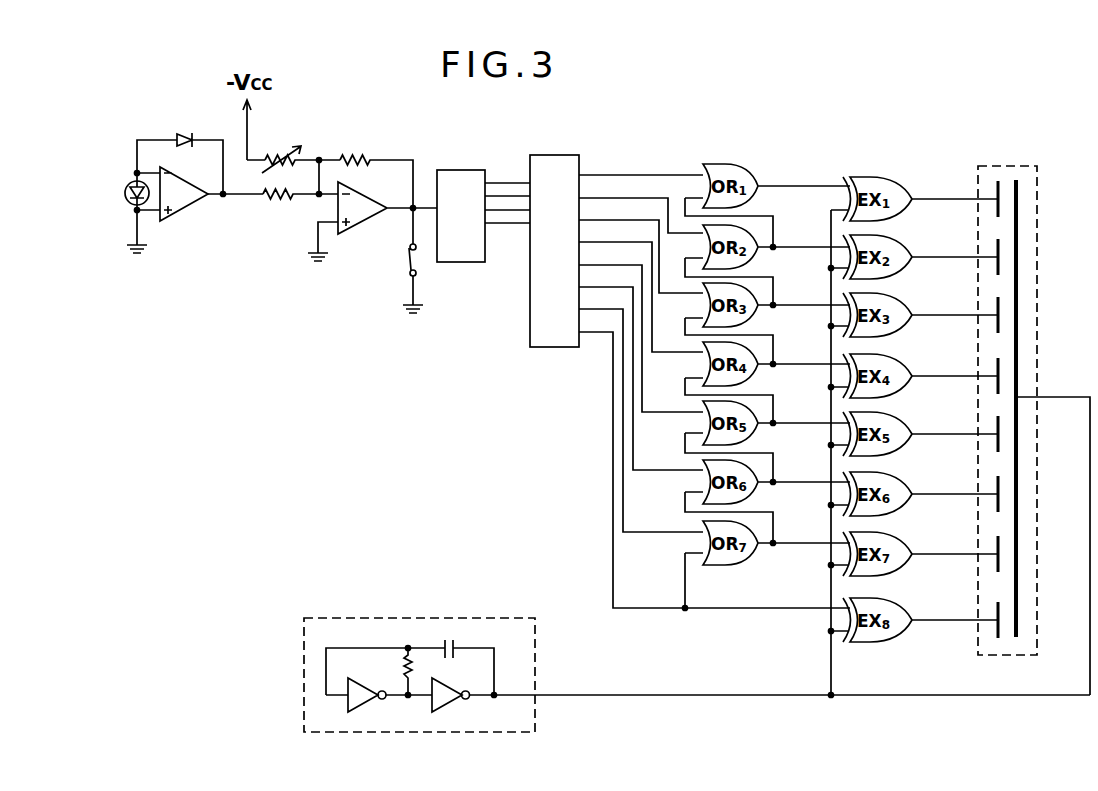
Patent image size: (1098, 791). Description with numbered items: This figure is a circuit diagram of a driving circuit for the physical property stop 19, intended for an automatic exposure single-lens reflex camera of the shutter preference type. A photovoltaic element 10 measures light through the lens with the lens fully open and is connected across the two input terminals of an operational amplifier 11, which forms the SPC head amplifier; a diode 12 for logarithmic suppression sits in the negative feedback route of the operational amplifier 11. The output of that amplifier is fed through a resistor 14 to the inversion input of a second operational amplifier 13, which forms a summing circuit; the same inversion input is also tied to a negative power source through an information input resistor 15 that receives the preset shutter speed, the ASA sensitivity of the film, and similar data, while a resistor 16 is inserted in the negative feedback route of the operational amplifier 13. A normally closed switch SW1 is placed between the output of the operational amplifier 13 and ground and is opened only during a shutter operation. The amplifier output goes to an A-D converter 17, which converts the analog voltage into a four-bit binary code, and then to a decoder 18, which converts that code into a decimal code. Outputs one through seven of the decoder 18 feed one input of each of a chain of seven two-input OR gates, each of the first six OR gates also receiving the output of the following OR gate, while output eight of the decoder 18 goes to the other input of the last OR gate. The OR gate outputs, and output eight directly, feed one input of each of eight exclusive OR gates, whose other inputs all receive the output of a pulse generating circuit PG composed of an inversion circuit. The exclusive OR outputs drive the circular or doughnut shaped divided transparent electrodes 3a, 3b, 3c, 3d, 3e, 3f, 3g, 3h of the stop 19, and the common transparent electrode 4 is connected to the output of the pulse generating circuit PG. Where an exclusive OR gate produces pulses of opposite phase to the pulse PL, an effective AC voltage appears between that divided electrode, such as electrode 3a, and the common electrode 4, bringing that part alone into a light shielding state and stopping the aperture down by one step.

The photovoltaic element 10 is at (127, 203).
The operational amplifier 11 is at (185, 208).
The diode 12 is at (187, 134).
The operational amplifier 13 is at (372, 219).
The resistor 14 is at (276, 203).
The information input resistor 15 is at (283, 156).
The resistor 16 is at (353, 155).
The A-D converter 17 is at (470, 262).
The decoder 18 is at (565, 347).
The physical property stop 19 is at (1013, 427).
The common transparent electrode 4 is at (1019, 312).
The divided transparent electrode 3a is at (995, 183).
The divided transparent electrode 3b is at (995, 241).
The divided transparent electrode 3c is at (995, 299).
The divided transparent electrode 3d is at (995, 360).
The divided transparent electrode 3e is at (995, 418).
The divided transparent electrode 3f is at (995, 478).
The divided transparent electrode 3g is at (995, 538).
The divided transparent electrode 3h is at (995, 604).
The normally closed switch SW1 is at (407, 258).
The pulse generating circuit PG is at (510, 732).
The pulse PL is at (655, 671).